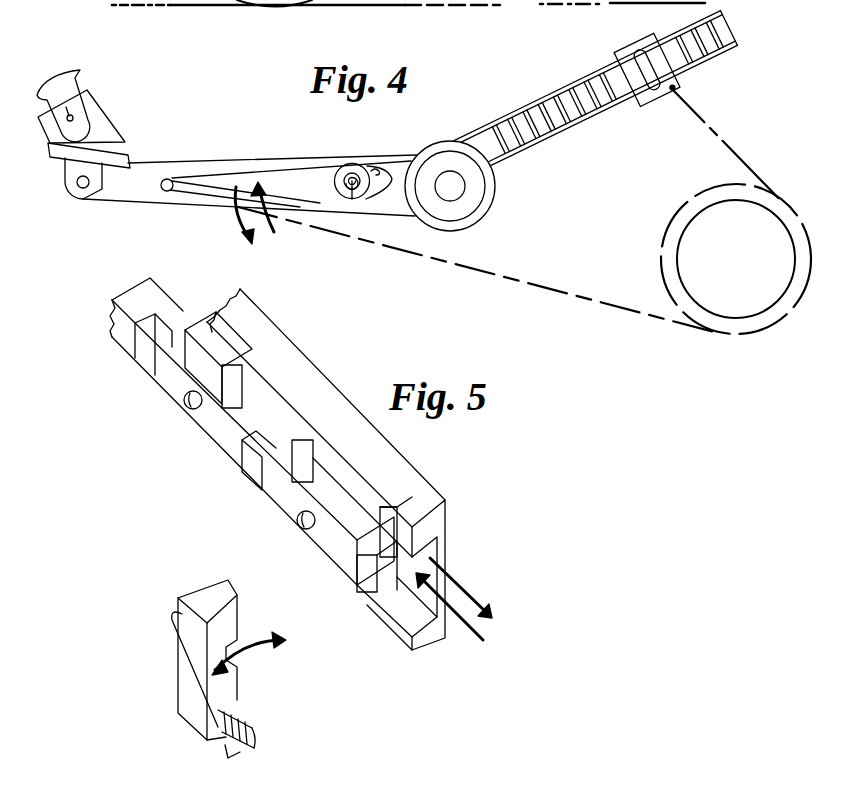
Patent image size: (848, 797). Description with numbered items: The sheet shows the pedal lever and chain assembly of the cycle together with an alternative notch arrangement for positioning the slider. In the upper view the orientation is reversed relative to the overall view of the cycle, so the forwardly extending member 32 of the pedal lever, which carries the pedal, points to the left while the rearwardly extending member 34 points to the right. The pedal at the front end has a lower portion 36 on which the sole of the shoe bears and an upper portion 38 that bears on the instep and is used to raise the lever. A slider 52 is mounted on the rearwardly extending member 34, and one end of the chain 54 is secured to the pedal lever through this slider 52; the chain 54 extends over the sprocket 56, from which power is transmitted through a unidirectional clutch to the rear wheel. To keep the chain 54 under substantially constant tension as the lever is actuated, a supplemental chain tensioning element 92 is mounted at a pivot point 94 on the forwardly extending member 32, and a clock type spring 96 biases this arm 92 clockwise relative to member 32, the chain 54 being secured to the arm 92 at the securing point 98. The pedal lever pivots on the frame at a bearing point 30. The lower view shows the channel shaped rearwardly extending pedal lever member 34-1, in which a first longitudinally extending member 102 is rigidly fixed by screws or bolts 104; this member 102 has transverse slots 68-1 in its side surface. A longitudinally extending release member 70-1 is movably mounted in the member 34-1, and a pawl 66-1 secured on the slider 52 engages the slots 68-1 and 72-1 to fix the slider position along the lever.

In FIG. 4, the pulley 30 is at (456, 192).
In FIG. 4, the forwardly extending member 32 is at (227, 160).
In FIG. 4, the rearwardly extending member 34 is at (522, 107).
In FIG. 4, the lower portion of the pedal 36 is at (125, 155).
In FIG. 4, the upper portion of the pedal 38 is at (65, 72).
In FIG. 4, the slider 52 is at (647, 112).
In FIG. 4, the chain 54 is at (707, 118).
In FIG. 4, the sprocket 56 is at (727, 305).
In FIG. 4, the supplemental chain tensioning element 92 is at (288, 183).
In FIG. 4, the pivot point 94 is at (354, 173).
In FIG. 4, the clock type spring 96 is at (355, 197).
In FIG. 4, the securing point 98 is at (162, 191).
In FIG. 5, the channel shaped rearwardly extending pedal lever member 34-1 is at (417, 478).
In FIG. 5, the pawl 66-1 is at (185, 718).
In FIG. 5, the transverse slots 68-1 is at (150, 331).
In FIG. 5, the longitudinally extending release member 70-1 is at (207, 330).
In FIG. 5, the slots 72-1 is at (367, 513).
In FIG. 5, the first longitudinally extending member 102 is at (327, 551).
In FIG. 5, the screws or bolts 104 is at (183, 408).